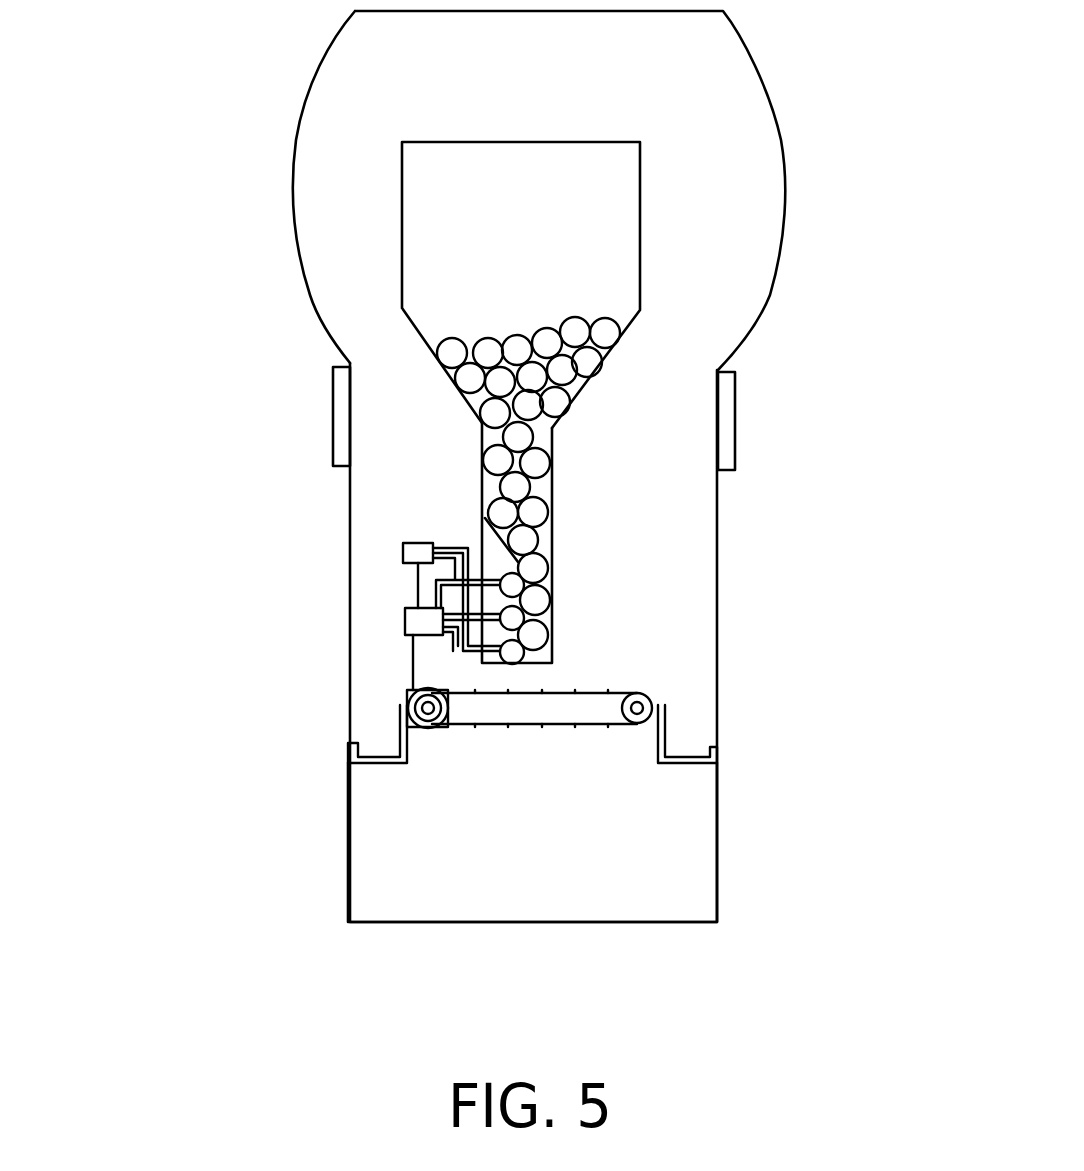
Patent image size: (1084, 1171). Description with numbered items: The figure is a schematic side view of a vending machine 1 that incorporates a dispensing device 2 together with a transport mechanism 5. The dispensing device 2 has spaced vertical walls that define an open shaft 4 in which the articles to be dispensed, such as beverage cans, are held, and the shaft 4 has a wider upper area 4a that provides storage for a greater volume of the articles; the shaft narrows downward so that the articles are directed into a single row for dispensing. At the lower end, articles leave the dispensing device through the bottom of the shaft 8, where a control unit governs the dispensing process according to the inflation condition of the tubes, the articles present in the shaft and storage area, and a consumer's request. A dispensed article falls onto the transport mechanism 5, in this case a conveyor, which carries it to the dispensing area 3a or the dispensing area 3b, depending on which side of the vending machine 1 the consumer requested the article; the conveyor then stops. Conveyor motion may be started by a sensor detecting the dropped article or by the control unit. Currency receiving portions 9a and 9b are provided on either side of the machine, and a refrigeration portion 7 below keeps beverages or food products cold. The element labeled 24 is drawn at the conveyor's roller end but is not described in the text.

The vending machine 1 is at (228, 99).
The dispensing device 2 is at (438, 480).
The dispensing area 3a is at (378, 740).
The dispensing area 3b is at (683, 745).
The shaft 4 is at (545, 488).
The upper area of the shaft 4a is at (582, 195).
The transport mechanism 5 is at (600, 693).
The refrigeration portion 7 is at (438, 828).
The bottom of the shaft 8 is at (527, 662).
The currency receiving portion 9a is at (333, 415).
The currency receiving portion 9b is at (733, 422).
The drive roller 24 is at (448, 727).